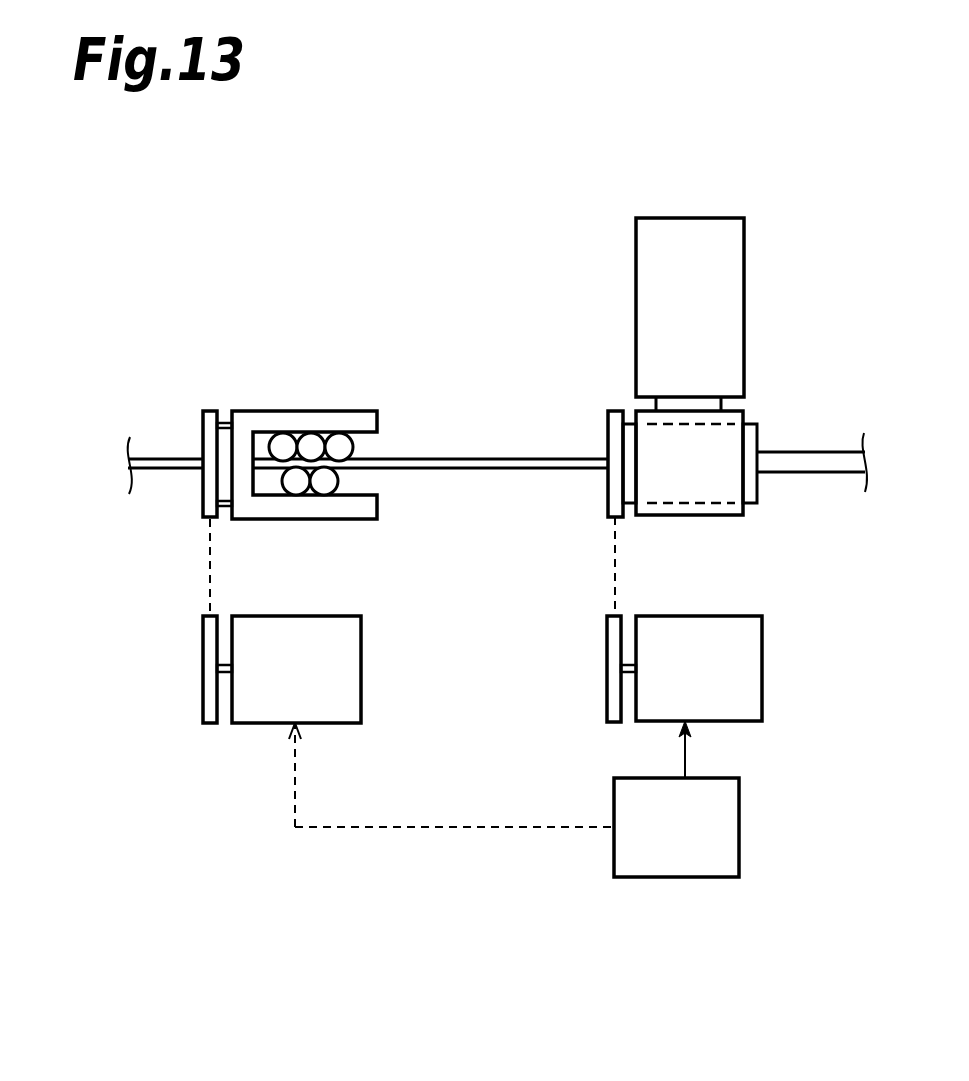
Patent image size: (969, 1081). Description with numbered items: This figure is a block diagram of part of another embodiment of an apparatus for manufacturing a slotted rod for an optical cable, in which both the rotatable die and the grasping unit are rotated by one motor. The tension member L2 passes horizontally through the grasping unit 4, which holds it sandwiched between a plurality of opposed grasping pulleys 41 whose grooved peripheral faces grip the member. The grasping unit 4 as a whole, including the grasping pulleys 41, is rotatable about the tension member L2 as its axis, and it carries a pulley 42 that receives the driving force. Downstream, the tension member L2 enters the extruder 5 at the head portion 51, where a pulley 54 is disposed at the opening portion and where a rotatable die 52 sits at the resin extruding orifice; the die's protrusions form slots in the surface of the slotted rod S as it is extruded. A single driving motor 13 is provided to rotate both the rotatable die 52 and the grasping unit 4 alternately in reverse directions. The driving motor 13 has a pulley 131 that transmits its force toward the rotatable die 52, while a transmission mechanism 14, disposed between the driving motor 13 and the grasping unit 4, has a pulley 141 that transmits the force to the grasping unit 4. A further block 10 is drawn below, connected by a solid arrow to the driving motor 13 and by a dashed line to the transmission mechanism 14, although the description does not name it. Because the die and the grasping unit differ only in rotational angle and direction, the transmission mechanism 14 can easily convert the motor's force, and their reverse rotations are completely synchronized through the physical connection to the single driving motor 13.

The tension member L2 is at (414, 458).
The pulley 42 is at (212, 410).
The grasping unit 4 is at (267, 410).
The grasping pulleys 41 is at (320, 488).
The pulley 54 is at (616, 411).
The extruder 5 is at (744, 244).
The head portion 51 is at (672, 491).
The rotatable die 52 is at (757, 497).
The slotted rod S is at (806, 450).
The pulley 141 is at (203, 722).
The transmission mechanism 14 is at (267, 723).
The pulley 131 is at (607, 722).
The driving motor 13 is at (762, 710).
The controller 10 is at (740, 865).